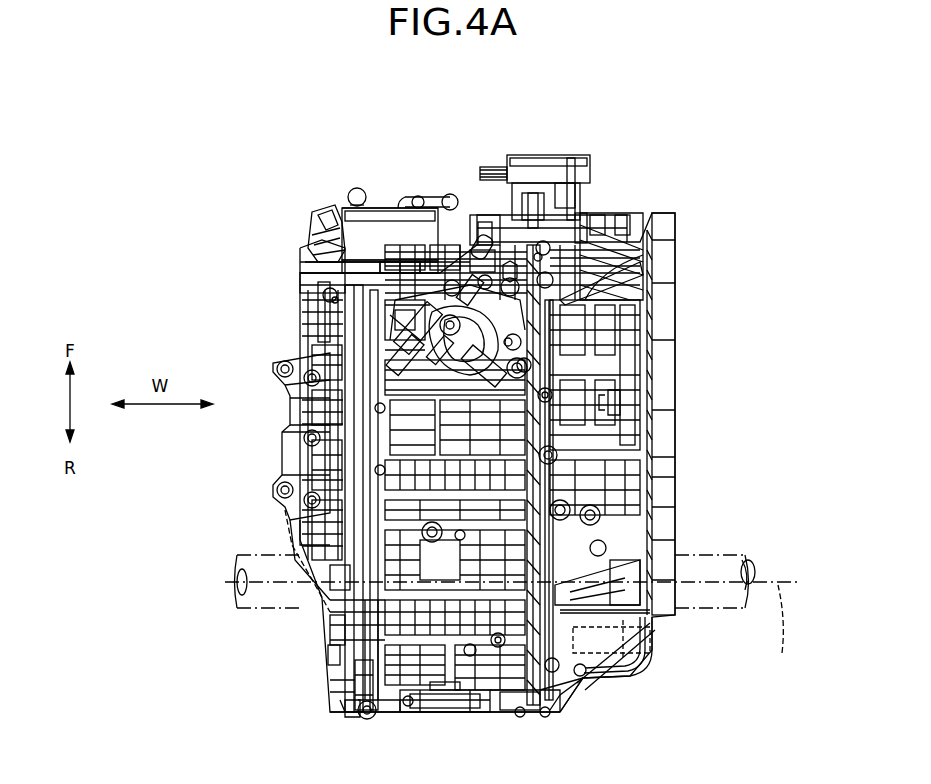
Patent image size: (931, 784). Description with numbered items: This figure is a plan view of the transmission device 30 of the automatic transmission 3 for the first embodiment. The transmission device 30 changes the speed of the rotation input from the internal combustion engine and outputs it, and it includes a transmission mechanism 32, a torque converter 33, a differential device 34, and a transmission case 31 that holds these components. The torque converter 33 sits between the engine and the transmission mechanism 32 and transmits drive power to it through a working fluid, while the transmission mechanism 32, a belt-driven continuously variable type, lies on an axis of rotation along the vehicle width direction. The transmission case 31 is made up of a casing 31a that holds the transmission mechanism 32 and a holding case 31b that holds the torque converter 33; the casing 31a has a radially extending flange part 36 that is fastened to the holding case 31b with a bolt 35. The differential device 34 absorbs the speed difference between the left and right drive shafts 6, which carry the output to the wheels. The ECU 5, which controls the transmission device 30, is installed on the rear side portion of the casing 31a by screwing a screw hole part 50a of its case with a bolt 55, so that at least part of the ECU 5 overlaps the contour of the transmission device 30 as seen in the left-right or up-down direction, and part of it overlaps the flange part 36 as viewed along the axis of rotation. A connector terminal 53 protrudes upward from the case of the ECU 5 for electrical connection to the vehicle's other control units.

The automatic transmission 3 is at (754, 150).
The transmission device 30 is at (677, 175).
The transmission case 31 is at (537, 102).
The casing 31a is at (437, 174).
The holding case 31b is at (577, 150).
The transmission mechanism 32 is at (297, 243).
The torque converter 33 is at (605, 198).
The differential device 34 is at (657, 640).
The bolt 35 is at (327, 653).
The flange part 36 is at (353, 683).
The screw hole part 50a is at (353, 703).
The connector terminal 53 is at (450, 710).
The bolt 55 is at (347, 712).
The ECU 5 is at (427, 720).
The drive shafts 6 is at (720, 543).